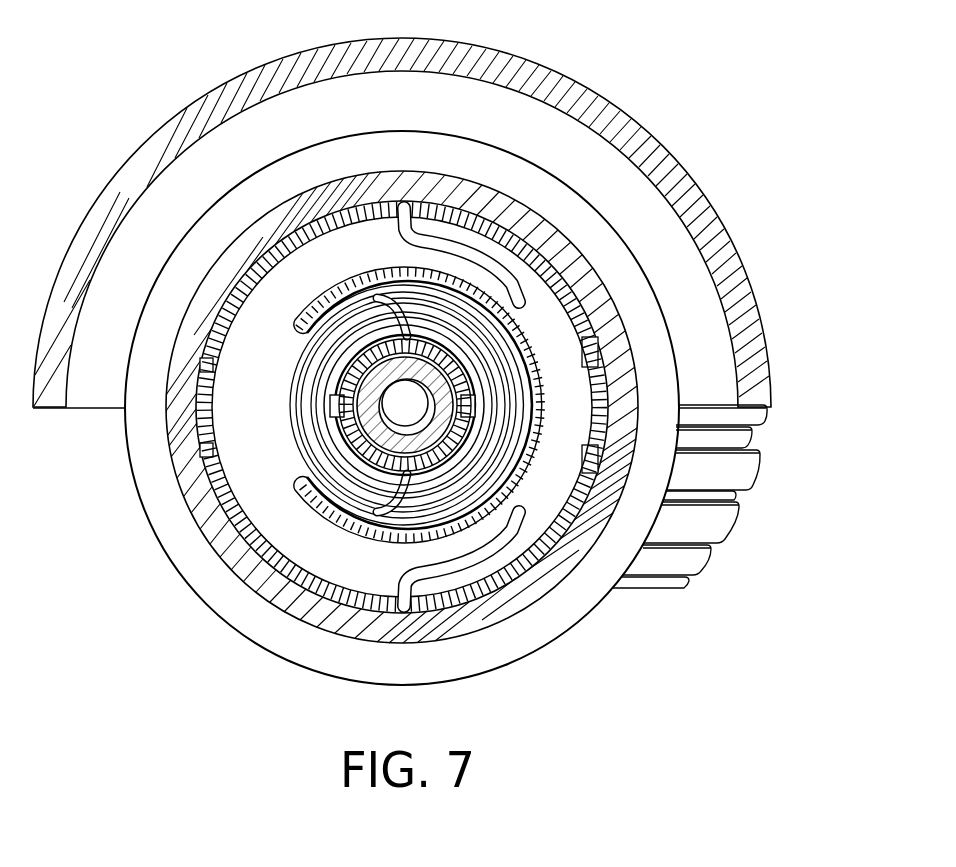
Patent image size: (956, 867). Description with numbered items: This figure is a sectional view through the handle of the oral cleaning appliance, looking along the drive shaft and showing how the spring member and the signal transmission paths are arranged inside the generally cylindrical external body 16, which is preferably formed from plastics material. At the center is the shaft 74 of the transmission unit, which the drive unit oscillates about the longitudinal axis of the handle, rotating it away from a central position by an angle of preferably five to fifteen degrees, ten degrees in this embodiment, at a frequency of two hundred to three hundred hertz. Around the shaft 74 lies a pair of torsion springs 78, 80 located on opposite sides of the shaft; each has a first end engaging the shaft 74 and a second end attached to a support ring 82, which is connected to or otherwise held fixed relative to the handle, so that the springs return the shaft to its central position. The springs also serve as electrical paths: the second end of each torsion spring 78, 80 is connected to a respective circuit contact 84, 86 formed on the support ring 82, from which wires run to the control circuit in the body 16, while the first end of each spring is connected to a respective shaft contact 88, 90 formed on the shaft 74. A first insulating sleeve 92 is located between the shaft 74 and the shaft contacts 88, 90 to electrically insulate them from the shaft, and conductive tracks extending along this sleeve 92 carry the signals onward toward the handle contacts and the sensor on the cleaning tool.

The external body 16 is at (748, 300).
The shaft 74 is at (440, 431).
The torsion spring 78 is at (317, 513).
The torsion spring 80 is at (338, 287).
The support ring 82 is at (197, 503).
The circuit contact 84 is at (455, 598).
The circuit contact 86 is at (386, 205).
The shaft contact 88 is at (520, 508).
The shaft contact 90 is at (334, 379).
The first insulating sleeve 92 is at (458, 387).